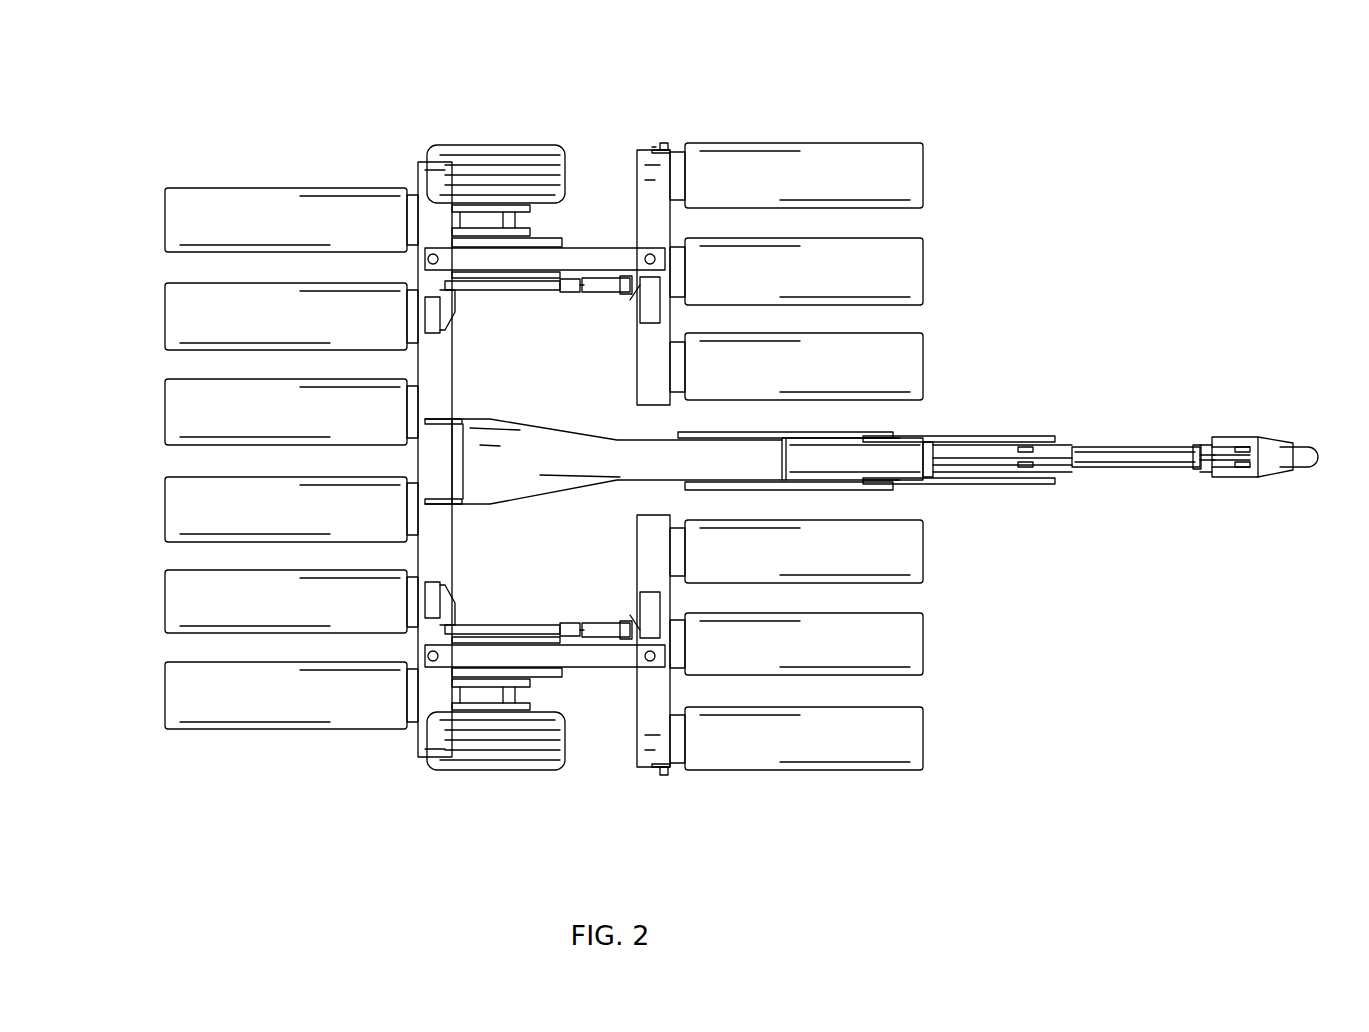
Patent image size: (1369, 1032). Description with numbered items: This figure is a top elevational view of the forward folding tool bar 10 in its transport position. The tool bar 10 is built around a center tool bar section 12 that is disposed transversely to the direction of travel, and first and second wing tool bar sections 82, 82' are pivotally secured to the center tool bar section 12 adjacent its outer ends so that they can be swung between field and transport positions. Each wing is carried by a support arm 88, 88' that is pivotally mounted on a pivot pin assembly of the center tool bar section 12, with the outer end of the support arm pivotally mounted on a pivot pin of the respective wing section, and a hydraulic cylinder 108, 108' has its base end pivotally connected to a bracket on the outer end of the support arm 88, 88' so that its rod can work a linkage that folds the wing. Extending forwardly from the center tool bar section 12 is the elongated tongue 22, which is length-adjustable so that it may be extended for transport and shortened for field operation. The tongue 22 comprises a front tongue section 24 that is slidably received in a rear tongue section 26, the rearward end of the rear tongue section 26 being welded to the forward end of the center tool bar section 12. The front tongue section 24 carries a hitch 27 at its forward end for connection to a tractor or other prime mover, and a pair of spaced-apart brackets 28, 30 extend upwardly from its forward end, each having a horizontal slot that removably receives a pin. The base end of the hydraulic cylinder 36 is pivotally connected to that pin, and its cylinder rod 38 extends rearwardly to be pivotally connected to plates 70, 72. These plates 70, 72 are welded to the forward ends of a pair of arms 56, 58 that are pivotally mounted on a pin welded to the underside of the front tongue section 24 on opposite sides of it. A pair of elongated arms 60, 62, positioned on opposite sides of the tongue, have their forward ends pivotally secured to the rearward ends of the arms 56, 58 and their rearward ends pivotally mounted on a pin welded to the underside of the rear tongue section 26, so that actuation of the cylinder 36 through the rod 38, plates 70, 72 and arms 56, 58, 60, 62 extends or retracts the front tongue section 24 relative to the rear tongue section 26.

The forward folding tool bar 10 is at (652, 112).
The center tool bar section 12 is at (452, 390).
The elongated tongue 22 is at (1142, 392).
The front tongue section 24 is at (1193, 473).
The rear tongue section 26 is at (553, 418).
The hitch 27 is at (1293, 445).
The bracket 28 is at (1222, 477).
The bracket 30 is at (1212, 445).
The hydraulic cylinder 36 is at (1103, 432).
The cylinder rod 38 is at (980, 455).
The arm 56 is at (900, 486).
The arm 58 is at (900, 436).
The elongated arm 60 is at (740, 488).
The elongated arm 62 is at (740, 437).
The plate 70 is at (1013, 485).
The plate 72 is at (995, 437).
The first wing tool bar section 82 is at (603, 253).
The second wing tool bar section 82' is at (687, 685).
The support arm 88 is at (545, 212).
The support arm 88' is at (545, 715).
The hydraulic cylinder 108 is at (575, 311).
The hydraulic cylinder 108' is at (565, 586).